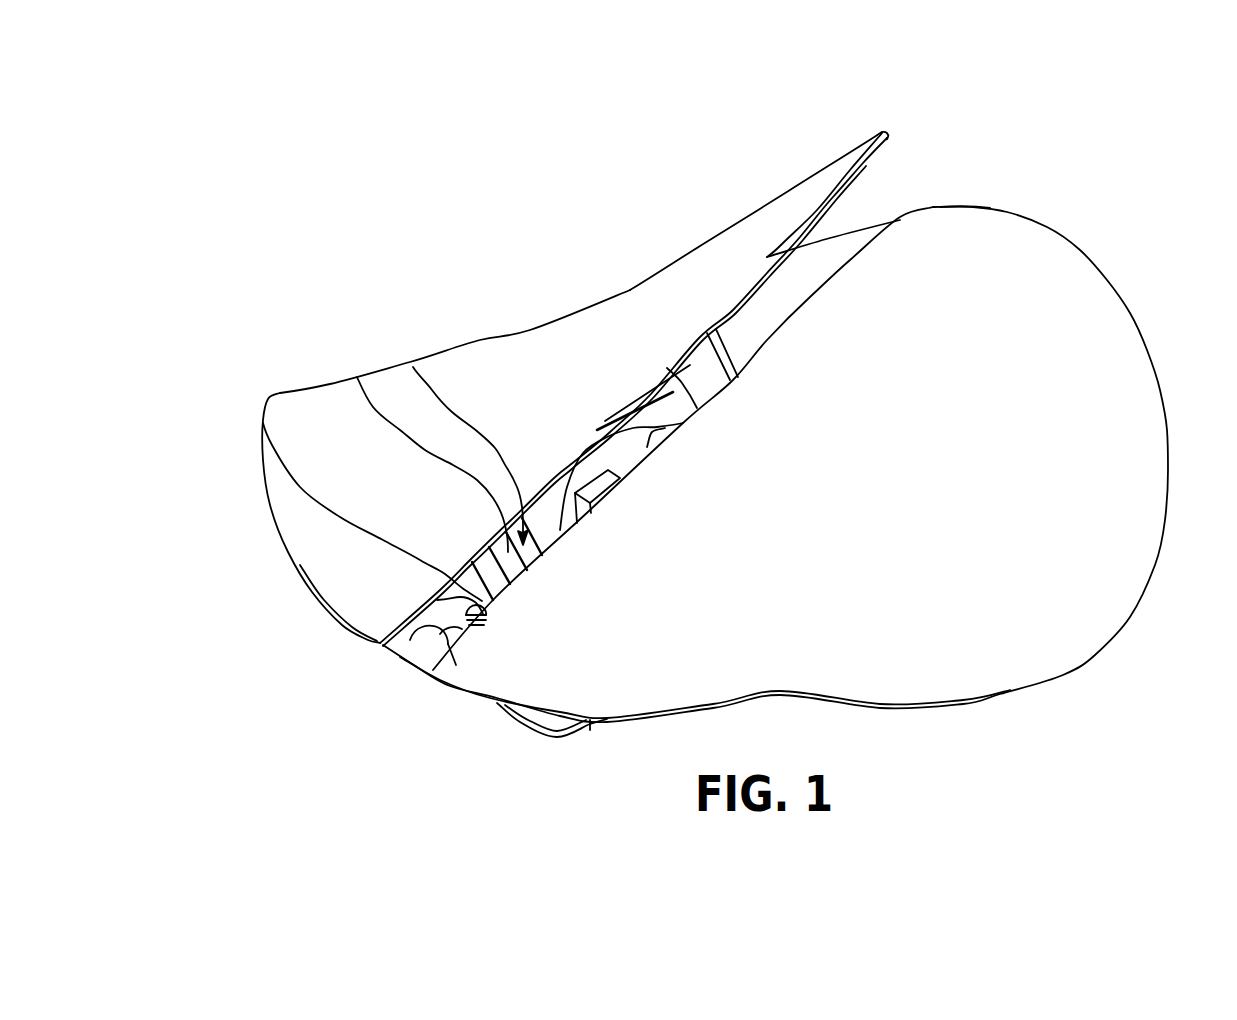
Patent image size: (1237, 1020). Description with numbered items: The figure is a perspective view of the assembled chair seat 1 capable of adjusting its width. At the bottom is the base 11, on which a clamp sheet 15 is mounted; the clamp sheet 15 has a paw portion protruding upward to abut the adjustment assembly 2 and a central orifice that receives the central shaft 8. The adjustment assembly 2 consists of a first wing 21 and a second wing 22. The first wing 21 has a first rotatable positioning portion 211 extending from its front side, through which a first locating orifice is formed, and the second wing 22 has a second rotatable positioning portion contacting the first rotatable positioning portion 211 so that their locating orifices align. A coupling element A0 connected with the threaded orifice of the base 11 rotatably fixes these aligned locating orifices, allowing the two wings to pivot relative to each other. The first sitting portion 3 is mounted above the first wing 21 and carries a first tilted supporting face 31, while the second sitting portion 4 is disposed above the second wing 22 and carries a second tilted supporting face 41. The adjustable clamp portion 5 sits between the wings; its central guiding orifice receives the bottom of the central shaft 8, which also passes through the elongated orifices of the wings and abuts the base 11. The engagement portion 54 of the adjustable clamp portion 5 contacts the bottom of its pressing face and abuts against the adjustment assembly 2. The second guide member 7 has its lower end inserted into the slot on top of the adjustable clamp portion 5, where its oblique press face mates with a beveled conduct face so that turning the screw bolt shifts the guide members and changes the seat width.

The chair seat 1 is at (613, 237).
The adjustment assembly 2 is at (402, 285).
The first wing 21 is at (413, 367).
The second wing 22 is at (357, 377).
The first rotatable positioning portion 211 is at (428, 627).
The clamp sheet 15 is at (263, 423).
The first sitting portion 3 is at (883, 130).
The first tilted supporting face 31 is at (713, 260).
The second sitting portion 4 is at (1047, 227).
The second tilted supporting face 41 is at (963, 243).
The base 11 is at (430, 667).
The adjustable clamp portion 5 is at (627, 447).
The second guide member 7 is at (602, 483).
The central shaft 8 is at (658, 447).
The engagement portion 54 is at (557, 530).
The coupling element A0 is at (437, 600).